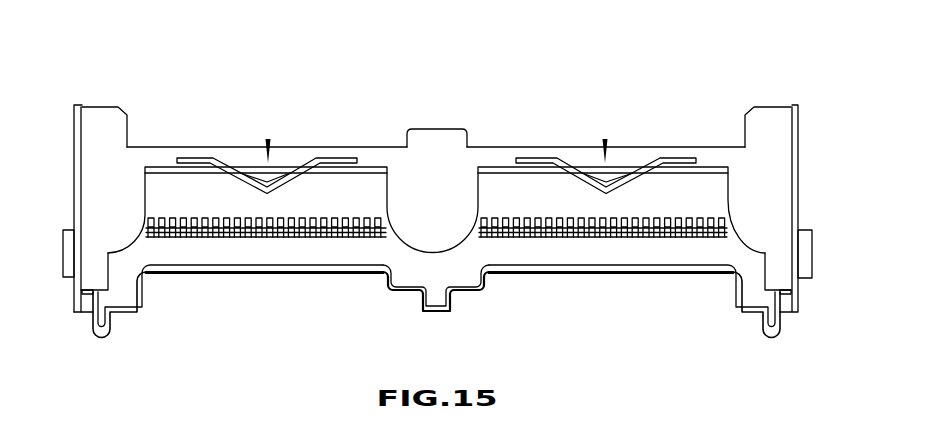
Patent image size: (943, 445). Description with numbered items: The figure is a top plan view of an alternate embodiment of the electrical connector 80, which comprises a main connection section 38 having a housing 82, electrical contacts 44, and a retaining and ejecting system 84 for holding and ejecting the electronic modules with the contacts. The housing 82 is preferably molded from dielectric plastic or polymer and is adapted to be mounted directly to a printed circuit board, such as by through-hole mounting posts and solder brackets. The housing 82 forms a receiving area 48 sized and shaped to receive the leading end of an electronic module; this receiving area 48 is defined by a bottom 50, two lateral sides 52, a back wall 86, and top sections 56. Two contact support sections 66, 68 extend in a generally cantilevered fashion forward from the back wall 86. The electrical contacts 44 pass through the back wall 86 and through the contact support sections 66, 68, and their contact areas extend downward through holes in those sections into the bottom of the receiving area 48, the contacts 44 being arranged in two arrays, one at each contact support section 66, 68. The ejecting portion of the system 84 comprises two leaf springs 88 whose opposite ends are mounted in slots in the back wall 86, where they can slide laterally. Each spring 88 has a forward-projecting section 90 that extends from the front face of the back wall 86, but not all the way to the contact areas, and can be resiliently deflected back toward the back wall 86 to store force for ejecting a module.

The electrical connector 80 is at (207, 60).
The main connection section 38 is at (97, 104).
The housing 82 is at (115, 113).
The lateral sides 52 is at (75, 197).
The back wall 86 is at (383, 152).
The top sections 56 is at (137, 205).
The retaining and ejecting system 84 is at (230, 167).
The springs 88 is at (268, 140).
The sections 90 is at (266, 191).
The electrical contacts 44 is at (251, 237).
The contact support section 66 is at (292, 237).
The contact support section 68 is at (612, 217).
The receiving area 48 is at (362, 253).
The bottom 50 is at (497, 255).